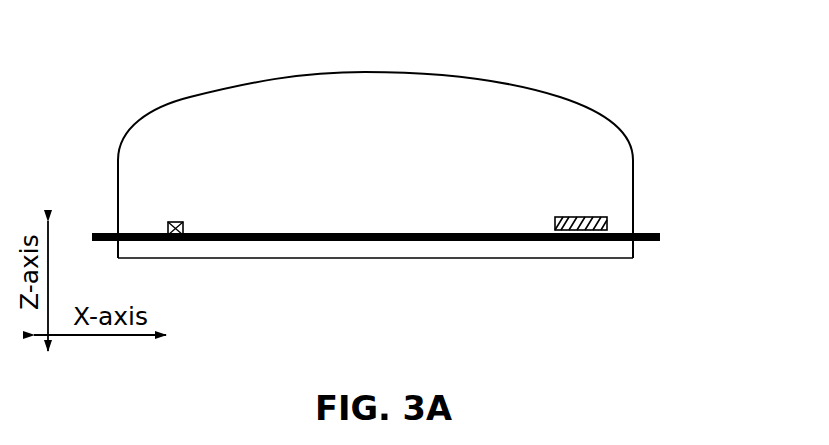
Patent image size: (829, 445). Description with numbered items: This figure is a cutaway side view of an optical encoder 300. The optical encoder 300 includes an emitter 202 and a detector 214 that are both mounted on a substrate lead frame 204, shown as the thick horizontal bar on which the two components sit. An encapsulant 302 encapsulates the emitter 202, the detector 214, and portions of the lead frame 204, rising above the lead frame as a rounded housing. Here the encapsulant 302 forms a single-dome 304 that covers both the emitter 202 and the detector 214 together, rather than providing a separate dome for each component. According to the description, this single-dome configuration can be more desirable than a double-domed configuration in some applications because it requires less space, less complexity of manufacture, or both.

The optical encoder 300 is at (416, 140).
The encapsulant 302 is at (335, 137).
The single-dome 304 is at (375, 137).
The emitter 202 is at (246, 209).
The substrate lead frame 204 is at (376, 285).
The detector 214 is at (518, 197).